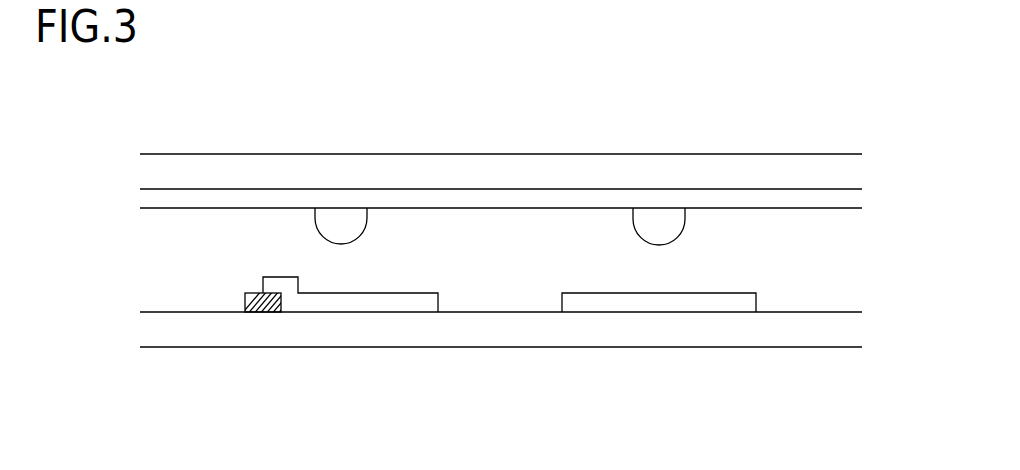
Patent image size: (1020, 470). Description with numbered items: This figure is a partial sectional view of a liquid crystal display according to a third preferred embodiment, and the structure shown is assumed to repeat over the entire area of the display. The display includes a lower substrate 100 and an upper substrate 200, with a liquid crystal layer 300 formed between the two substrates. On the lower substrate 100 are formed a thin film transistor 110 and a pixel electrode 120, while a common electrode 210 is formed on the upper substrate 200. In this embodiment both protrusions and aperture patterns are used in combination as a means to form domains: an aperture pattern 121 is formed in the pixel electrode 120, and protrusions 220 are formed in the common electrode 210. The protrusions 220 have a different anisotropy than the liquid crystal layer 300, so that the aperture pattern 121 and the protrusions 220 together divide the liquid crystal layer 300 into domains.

The lower substrate 100 is at (367, 328).
The thin film transistor 110 is at (262, 313).
The pixel electrode 120 is at (632, 308).
The aperture pattern 121 is at (500, 312).
The upper substrate 200 is at (394, 162).
The common electrode 210 is at (499, 198).
The protrusions 220 is at (342, 216).
The liquid crystal layer 300 is at (140, 256).